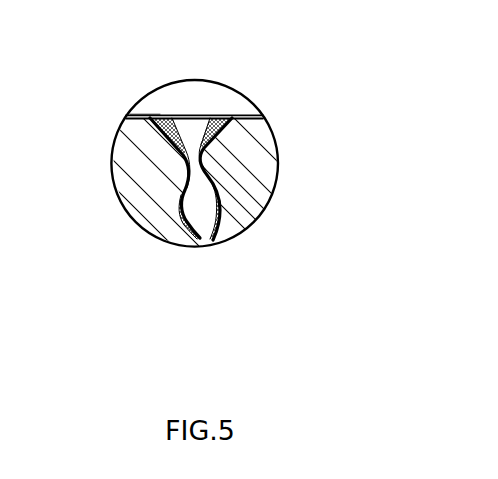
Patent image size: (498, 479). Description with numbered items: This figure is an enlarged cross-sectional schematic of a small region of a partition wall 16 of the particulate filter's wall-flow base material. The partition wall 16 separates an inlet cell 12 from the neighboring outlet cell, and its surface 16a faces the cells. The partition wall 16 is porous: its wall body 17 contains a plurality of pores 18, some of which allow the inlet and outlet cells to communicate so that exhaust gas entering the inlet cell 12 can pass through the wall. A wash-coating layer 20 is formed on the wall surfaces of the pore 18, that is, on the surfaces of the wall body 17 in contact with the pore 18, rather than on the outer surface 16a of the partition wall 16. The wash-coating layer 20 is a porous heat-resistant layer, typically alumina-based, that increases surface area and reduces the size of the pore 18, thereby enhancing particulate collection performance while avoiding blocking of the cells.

The inlet cell 12 is at (160, 101).
The partition wall 16 is at (238, 118).
The surface of partition wall 16a is at (143, 115).
The wall body 17 is at (258, 151).
The pore 18 is at (196, 202).
The wash-coating layer 20 is at (177, 116).